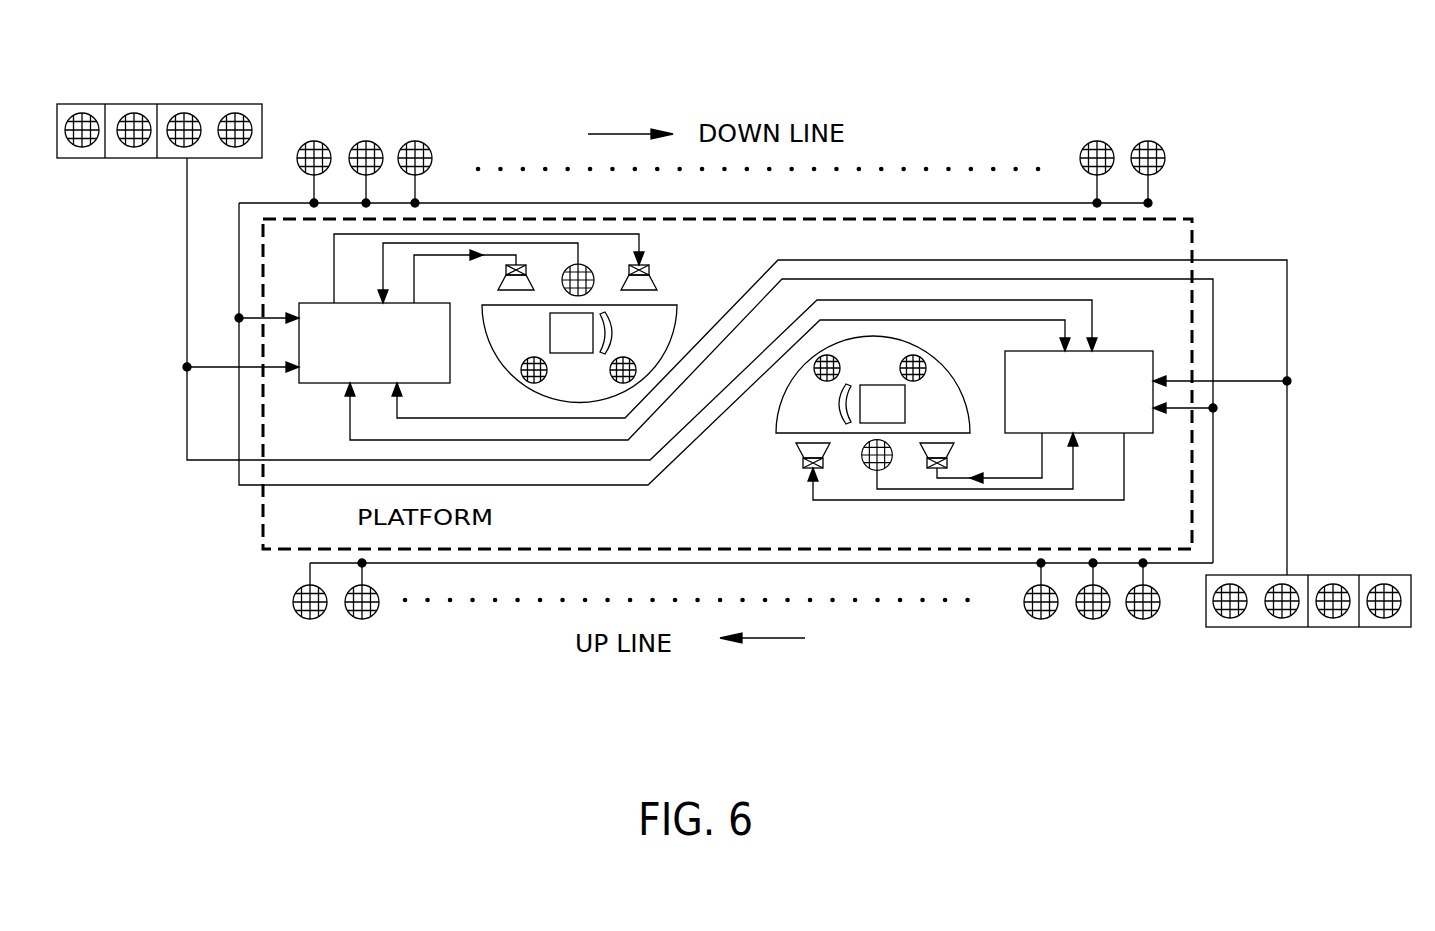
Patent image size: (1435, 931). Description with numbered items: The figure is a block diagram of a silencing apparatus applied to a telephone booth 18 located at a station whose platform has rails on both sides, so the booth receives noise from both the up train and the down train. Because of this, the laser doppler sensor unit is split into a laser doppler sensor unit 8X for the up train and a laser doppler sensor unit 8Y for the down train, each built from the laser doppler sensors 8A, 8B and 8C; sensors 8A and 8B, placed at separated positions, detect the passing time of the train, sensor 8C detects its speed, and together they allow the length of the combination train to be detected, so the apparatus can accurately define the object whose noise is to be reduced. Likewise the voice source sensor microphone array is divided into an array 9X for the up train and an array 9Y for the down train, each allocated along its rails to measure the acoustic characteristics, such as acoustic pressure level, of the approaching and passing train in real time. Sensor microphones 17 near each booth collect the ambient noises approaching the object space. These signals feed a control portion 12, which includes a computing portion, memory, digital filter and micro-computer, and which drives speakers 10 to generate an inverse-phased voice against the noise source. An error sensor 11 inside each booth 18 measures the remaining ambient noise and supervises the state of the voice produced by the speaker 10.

The laser doppler sensor 8A is at (72, 104).
The laser doppler sensor 8B is at (122, 104).
The laser doppler sensor 8C is at (190, 104).
The laser doppler sensor unit for the down train 8Y is at (262, 123).
The laser doppler sensor unit for the up train 8X is at (1206, 600).
The voice source sensor microphone array for the down train 9Y is at (413, 146).
The voice source sensor microphone array for the up train 9X is at (1033, 615).
The speaker 10 is at (504, 281).
The error sensor 11 is at (527, 383).
The control portion 12 is at (328, 385).
The sensor microphone 17 is at (587, 268).
The telephone booth 18 is at (669, 303).